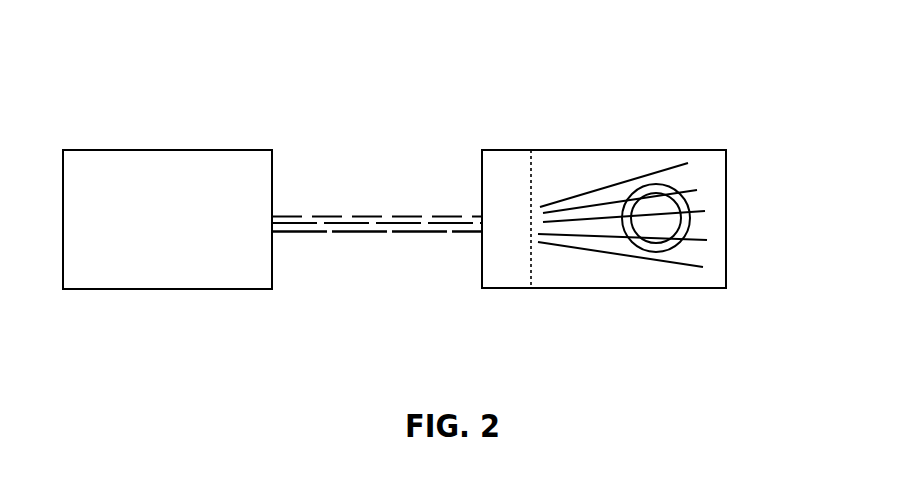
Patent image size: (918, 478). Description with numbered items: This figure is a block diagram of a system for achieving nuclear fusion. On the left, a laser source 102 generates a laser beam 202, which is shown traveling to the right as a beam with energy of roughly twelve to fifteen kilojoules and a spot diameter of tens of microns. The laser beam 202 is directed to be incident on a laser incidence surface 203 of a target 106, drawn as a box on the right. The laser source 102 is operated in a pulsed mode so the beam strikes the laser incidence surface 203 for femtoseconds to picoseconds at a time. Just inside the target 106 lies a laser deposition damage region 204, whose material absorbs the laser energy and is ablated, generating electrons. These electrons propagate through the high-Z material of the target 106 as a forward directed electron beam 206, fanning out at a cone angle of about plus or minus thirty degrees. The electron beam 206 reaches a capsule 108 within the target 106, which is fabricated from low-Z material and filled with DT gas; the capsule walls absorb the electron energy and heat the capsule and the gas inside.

The laser source 102 is at (131, 150).
The laser beam 202 is at (347, 215).
The laser incidence surface 203 is at (481, 182).
The laser deposition damage region 204 is at (502, 275).
The electron beam 206 is at (623, 175).
The capsule 108 is at (690, 222).
The target 106 is at (592, 288).